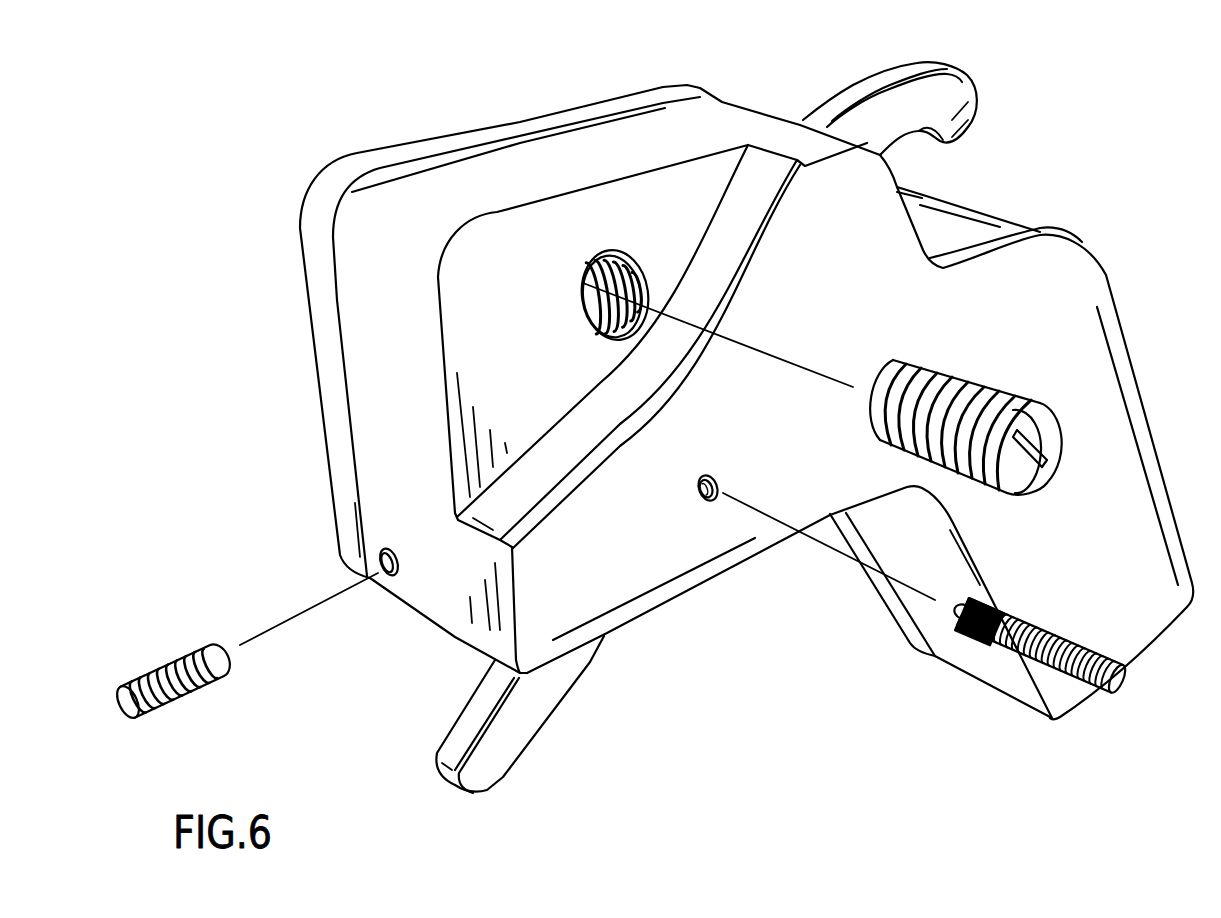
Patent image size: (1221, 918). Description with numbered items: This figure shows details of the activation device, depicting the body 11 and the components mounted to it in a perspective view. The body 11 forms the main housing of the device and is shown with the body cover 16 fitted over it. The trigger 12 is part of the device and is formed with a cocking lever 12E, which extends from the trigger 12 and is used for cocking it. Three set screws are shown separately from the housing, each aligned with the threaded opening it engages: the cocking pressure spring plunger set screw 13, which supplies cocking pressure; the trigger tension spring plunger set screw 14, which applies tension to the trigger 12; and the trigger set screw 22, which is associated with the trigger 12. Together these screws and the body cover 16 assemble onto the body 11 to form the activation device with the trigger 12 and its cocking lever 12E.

The body 11 is at (387, 157).
The trigger 12 is at (537, 713).
The cocking lever 12E is at (962, 93).
The cocking pressure spring plunger set screw 13 is at (997, 652).
The trigger tension spring plunger set screw 14 is at (987, 380).
The body cover 16 is at (433, 588).
The trigger set screw 22 is at (175, 657).